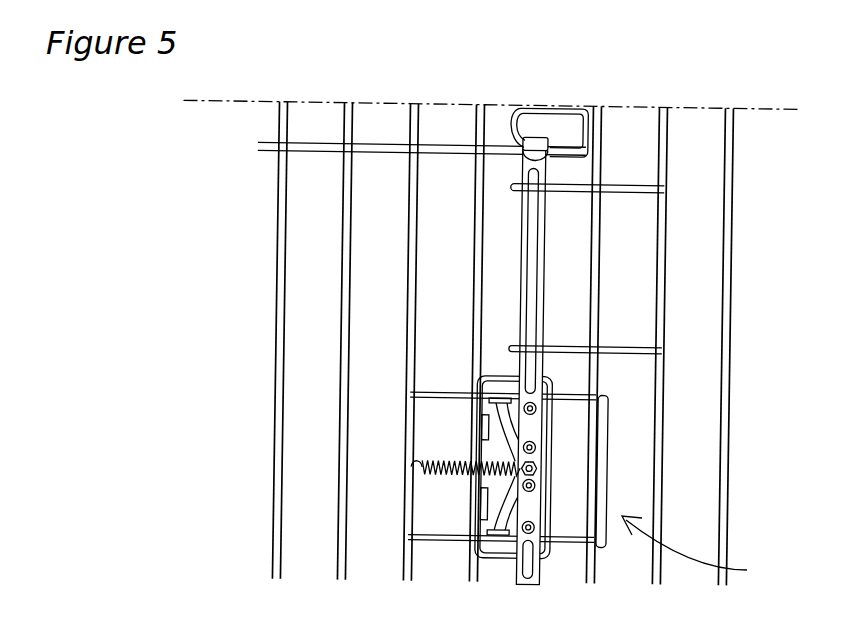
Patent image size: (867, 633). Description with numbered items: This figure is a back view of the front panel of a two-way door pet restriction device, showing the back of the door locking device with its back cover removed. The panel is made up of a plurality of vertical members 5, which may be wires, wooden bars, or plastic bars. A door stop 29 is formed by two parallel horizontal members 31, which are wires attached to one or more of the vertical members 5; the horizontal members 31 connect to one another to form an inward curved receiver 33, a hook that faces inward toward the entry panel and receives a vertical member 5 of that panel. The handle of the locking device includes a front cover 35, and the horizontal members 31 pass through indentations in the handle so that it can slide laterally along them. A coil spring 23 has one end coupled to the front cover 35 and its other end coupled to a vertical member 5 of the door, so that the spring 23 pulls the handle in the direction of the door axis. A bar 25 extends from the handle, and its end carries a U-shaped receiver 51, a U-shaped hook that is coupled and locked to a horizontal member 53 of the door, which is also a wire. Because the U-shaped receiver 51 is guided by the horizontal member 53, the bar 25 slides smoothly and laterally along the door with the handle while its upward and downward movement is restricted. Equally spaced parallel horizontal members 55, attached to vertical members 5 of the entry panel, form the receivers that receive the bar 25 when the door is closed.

The vertical member 5 is at (737, 150).
The spring 23 is at (453, 474).
The bar 25 is at (546, 248).
The door stop 29 is at (702, 551).
The horizontal member 31 is at (445, 392).
The inward curved receiver 33 is at (609, 466).
The front cover 35 is at (505, 374).
The U-shaped receiver 51 is at (512, 107).
The horizontal member 53 is at (309, 143).
The horizontal member 55 is at (623, 182).